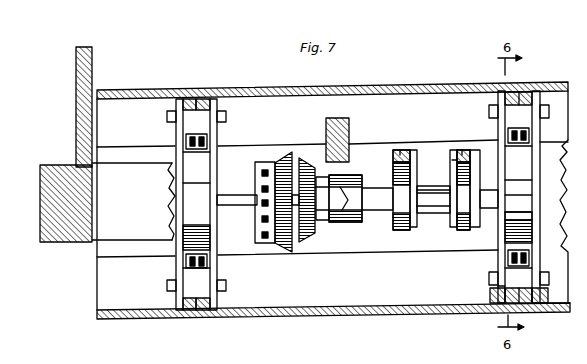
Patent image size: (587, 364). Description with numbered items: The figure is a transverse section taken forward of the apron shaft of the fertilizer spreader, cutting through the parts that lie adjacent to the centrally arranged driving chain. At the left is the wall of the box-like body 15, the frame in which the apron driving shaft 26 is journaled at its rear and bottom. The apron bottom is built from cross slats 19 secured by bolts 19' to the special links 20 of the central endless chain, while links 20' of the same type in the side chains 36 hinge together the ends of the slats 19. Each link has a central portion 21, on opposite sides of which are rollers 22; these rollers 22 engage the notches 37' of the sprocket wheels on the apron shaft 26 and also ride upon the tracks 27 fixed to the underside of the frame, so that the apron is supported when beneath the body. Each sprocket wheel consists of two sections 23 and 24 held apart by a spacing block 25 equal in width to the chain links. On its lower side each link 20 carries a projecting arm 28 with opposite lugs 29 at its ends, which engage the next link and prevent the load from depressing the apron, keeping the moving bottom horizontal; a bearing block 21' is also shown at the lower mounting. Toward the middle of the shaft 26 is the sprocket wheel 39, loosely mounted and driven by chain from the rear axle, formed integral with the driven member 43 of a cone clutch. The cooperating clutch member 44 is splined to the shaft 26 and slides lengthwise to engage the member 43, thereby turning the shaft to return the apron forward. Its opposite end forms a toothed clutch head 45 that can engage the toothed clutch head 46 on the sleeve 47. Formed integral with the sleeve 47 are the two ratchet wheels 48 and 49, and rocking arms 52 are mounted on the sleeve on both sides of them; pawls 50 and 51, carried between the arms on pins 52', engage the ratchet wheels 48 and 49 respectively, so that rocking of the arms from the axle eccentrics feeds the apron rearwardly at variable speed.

The box-like body 15 is at (76, 128).
The cross slat 19 is at (333, 204).
The bolt 19' is at (203, 204).
The special link 20 is at (511, 201).
The chain link 20' is at (206, 203).
The central portion 21 is at (525, 83).
The bearing block 21' is at (471, 292).
The roller 22 is at (175, 116).
The sprocket wheel section 23 is at (533, 259).
The sprocket wheel section 24 is at (498, 168).
The spacing block 25 is at (506, 236).
The apron driving shaft 26 is at (506, 216).
The track 27 is at (540, 313).
The projecting arm 28 is at (505, 132).
The lug 29 is at (502, 142).
The chain 36 is at (218, 116).
The notch 37' is at (176, 204).
The sprocket wheel 39 is at (256, 187).
The driven clutch member 43 is at (285, 252).
The clutch member 44 is at (312, 243).
The toothed clutch head 45 is at (331, 221).
The toothed clutch head 46 is at (358, 222).
The sleeve 47 is at (435, 213).
The ratchet wheel 48 is at (404, 230).
The ratchet wheel 49 is at (463, 230).
The pawl 50 is at (398, 150).
The pawl 51 is at (452, 178).
The rocking arm 52 is at (431, 141).
The pin 52' is at (438, 156).